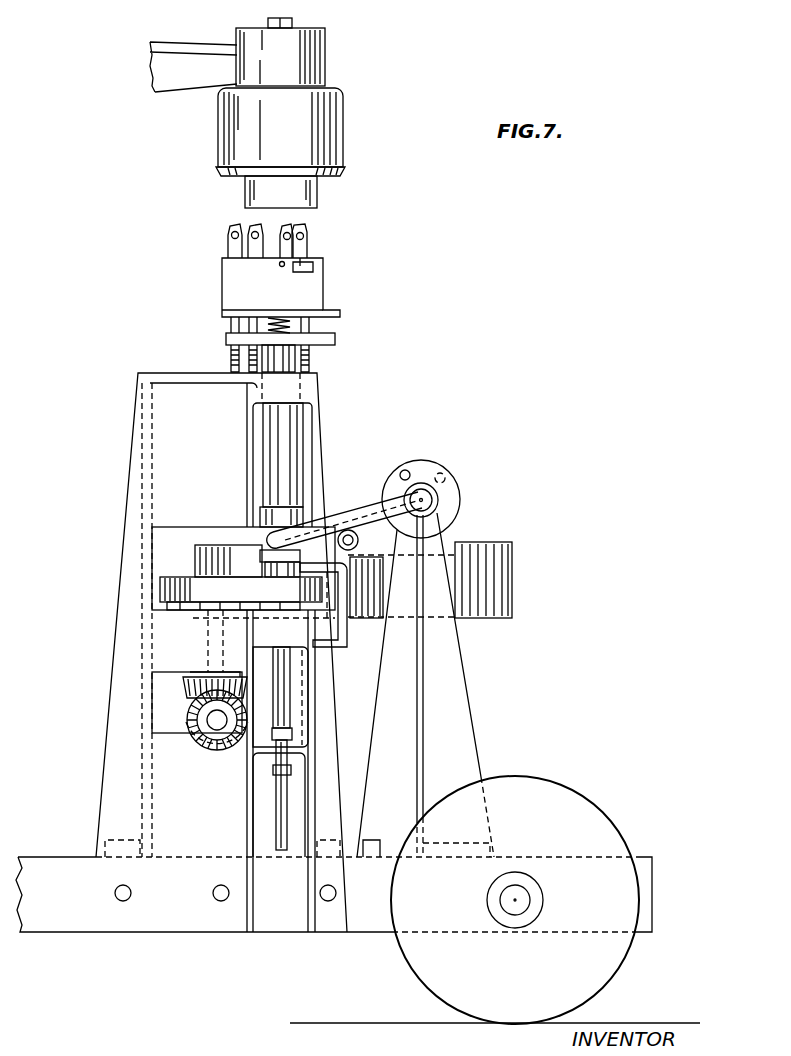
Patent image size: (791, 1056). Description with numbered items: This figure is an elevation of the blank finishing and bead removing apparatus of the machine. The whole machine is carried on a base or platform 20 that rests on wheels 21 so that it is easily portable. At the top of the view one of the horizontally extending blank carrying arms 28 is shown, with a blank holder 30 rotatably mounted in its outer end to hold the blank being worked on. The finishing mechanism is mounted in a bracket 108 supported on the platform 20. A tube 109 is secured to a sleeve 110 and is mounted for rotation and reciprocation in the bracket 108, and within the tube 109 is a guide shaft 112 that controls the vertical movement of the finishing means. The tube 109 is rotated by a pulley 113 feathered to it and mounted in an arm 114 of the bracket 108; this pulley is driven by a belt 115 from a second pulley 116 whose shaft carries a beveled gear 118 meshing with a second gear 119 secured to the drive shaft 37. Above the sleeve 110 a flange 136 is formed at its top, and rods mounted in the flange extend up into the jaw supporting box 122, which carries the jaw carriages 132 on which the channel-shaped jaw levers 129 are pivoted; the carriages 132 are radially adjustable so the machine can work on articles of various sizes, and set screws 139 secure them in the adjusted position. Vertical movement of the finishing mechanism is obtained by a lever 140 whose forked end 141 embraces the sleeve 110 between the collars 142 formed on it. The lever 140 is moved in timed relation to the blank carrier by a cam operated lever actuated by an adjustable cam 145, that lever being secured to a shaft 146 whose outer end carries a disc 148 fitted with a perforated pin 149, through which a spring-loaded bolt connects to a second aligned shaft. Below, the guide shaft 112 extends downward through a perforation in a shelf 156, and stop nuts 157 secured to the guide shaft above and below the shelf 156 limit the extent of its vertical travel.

The blank carrying arm 28 is at (152, 74).
The blank holder 30 is at (320, 134).
The jaw lever 129 is at (308, 243).
The set screw 139 is at (279, 265).
The jaw carriage 132 is at (306, 275).
The jaw supporting box 122 is at (323, 305).
The flange 136 is at (335, 340).
The bracket 108 is at (142, 450).
The sleeve 110 is at (292, 437).
The collar 142 is at (275, 513).
The belt 115 is at (252, 555).
The lever 140 is at (350, 507).
The forked end 141 is at (345, 528).
The perforated pin 149 is at (408, 470).
The disc 148 is at (455, 483).
The shaft 146 is at (438, 495).
The adjustable cam 145 is at (512, 558).
The second pulley 116 is at (160, 618).
The pulley 113 is at (345, 609).
The arm 114 is at (342, 600).
The beveled gear 118 is at (183, 690).
The second gear 119 is at (195, 712).
The tube 109 is at (285, 685).
The stop nut 157 is at (290, 735).
The shelf 156 is at (296, 748).
The drive shaft 37 is at (220, 722).
The guide shaft 112 is at (278, 826).
The base or platform 20 is at (652, 865).
The wheel 21 is at (610, 950).